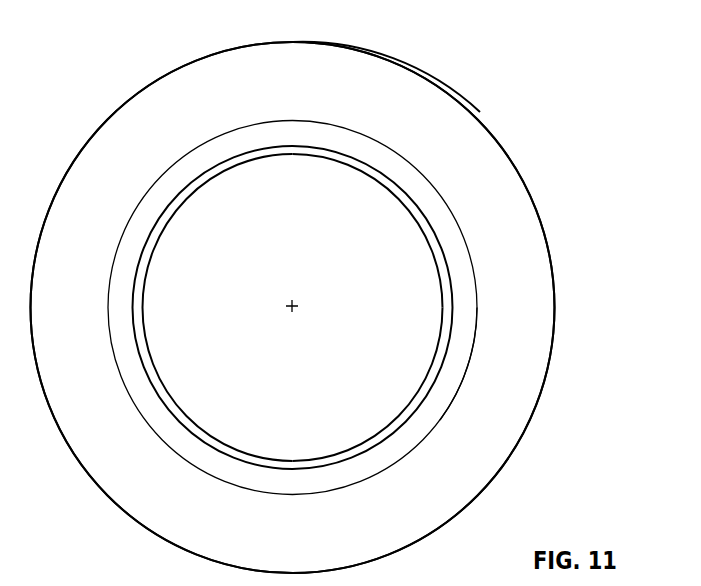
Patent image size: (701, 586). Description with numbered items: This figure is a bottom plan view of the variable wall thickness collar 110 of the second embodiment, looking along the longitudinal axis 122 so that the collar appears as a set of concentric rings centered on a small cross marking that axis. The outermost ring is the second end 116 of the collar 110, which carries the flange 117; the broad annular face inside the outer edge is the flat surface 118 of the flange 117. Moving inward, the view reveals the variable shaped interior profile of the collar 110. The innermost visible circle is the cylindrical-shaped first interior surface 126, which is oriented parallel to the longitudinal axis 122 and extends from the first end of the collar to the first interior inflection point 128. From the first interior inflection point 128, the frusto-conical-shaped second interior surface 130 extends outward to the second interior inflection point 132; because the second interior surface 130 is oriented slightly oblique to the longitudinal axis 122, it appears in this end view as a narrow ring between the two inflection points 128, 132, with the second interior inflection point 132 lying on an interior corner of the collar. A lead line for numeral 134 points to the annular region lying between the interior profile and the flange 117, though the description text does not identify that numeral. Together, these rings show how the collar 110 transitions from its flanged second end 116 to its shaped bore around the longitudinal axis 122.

The variable wall thickness collar 110 is at (126, 43).
The second end 116 is at (418, 90).
The flange 117 is at (562, 271).
The flat surface 118 is at (333, 62).
The longitudinal axis 122 is at (296, 311).
The first interior surface 126 is at (197, 194).
The first interior inflection point 128 is at (390, 193).
The second interior surface 130 is at (439, 256).
The second interior inflection point 132 is at (427, 224).
The intermediate annular region 134 is at (458, 330).